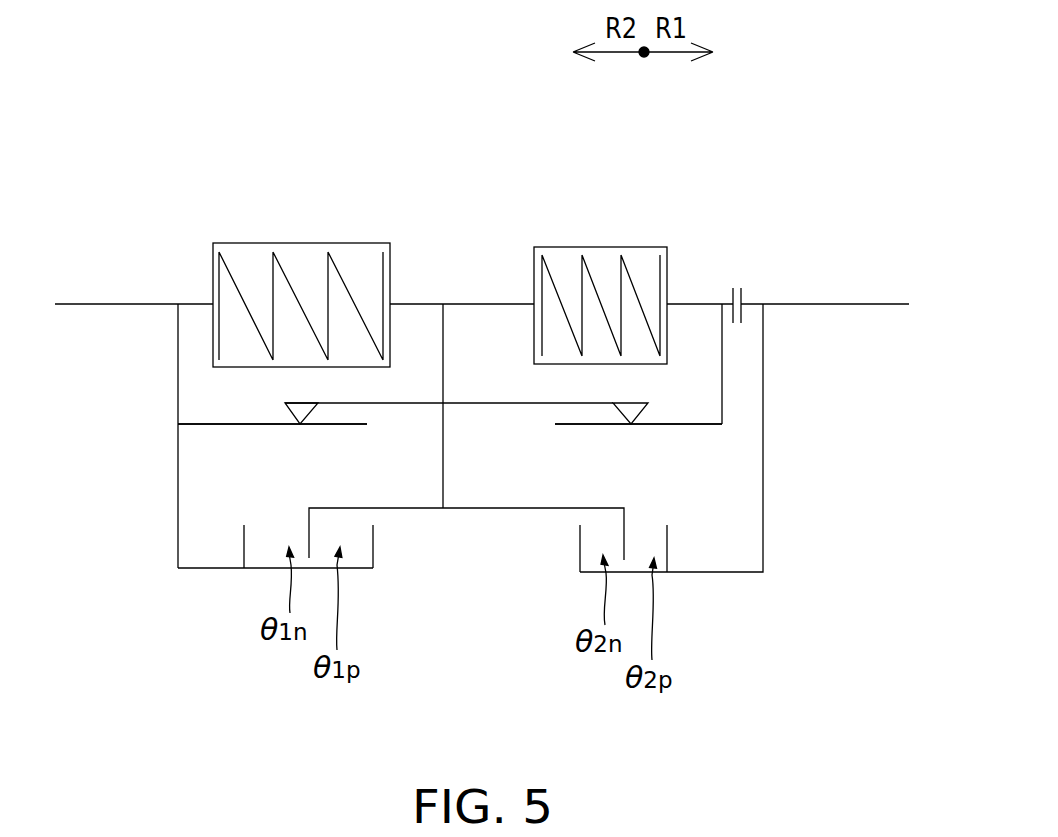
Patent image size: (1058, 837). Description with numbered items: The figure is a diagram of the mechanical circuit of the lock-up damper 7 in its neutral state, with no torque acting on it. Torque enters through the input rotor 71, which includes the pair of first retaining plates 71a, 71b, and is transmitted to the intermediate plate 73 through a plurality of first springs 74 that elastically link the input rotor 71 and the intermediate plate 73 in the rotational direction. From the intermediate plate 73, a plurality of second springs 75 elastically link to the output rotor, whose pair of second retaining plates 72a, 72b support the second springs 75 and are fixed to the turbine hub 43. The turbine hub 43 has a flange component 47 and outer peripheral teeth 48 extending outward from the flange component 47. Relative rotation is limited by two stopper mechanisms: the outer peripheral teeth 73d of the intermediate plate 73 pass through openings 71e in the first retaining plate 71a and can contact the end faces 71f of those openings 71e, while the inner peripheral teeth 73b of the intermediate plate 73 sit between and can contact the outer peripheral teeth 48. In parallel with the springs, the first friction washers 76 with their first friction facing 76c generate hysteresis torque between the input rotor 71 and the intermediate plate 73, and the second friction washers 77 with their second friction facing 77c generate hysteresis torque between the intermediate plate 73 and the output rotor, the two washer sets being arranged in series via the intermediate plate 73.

The lock-up damper 7 is at (287, 188).
The input rotor 71 is at (93, 292).
The intermediate plate 73 is at (453, 300).
The first springs 74 is at (347, 270).
The second springs 75 is at (592, 262).
The first friction washers 76 is at (422, 402).
The first friction facing 76c is at (298, 412).
The second friction washers 77 is at (485, 402).
The second friction facing 77c is at (633, 412).
The turbine hub 43 is at (835, 315).
The flange component 47 is at (763, 490).
The outer peripheral teeth 48 is at (580, 543).
The first retaining plate 71a is at (353, 424).
The first retaining plate 71b is at (309, 464).
The second retaining plate 72a is at (562, 425).
The second retaining plate 72b is at (635, 454).
The inner peripheral teeth 73b is at (624, 517).
The outer peripheral teeth 73d is at (305, 525).
The openings 71e is at (352, 568).
The end faces 71f is at (244, 535).